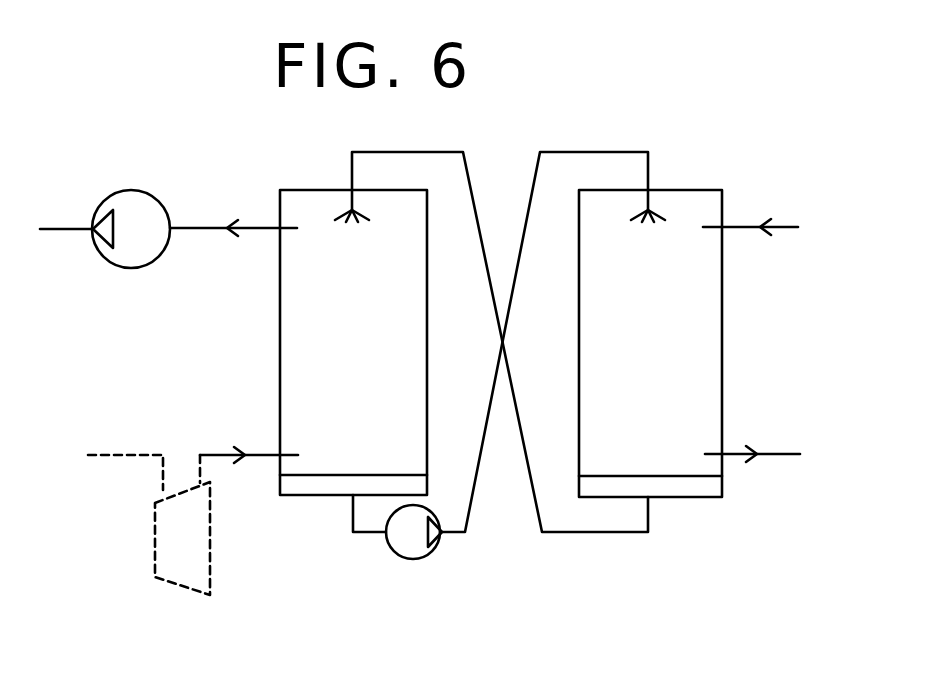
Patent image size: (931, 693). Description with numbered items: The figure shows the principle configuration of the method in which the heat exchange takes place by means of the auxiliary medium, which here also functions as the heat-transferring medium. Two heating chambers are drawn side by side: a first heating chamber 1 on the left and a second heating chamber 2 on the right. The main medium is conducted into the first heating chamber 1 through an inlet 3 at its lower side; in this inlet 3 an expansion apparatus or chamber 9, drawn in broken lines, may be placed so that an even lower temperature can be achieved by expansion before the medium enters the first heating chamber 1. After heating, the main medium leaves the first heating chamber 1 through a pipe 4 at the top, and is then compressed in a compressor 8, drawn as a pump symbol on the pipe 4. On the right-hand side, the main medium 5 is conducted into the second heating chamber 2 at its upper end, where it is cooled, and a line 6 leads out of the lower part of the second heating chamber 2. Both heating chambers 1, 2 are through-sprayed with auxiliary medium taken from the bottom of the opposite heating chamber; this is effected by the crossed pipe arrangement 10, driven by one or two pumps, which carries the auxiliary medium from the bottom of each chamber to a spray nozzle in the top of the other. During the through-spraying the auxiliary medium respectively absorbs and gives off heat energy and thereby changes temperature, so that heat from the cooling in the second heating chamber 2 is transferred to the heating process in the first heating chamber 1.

The first heating chamber 1 is at (364, 345).
The second heating chamber 2 is at (668, 346).
The inlet 3 is at (264, 454).
The pipe 4 is at (257, 226).
The main medium 5 is at (780, 226).
The outlet line 6 is at (781, 453).
The compressor 8 is at (150, 190).
The expansion apparatus or chamber 9 is at (212, 572).
The pipe arrangement 10 is at (441, 545).